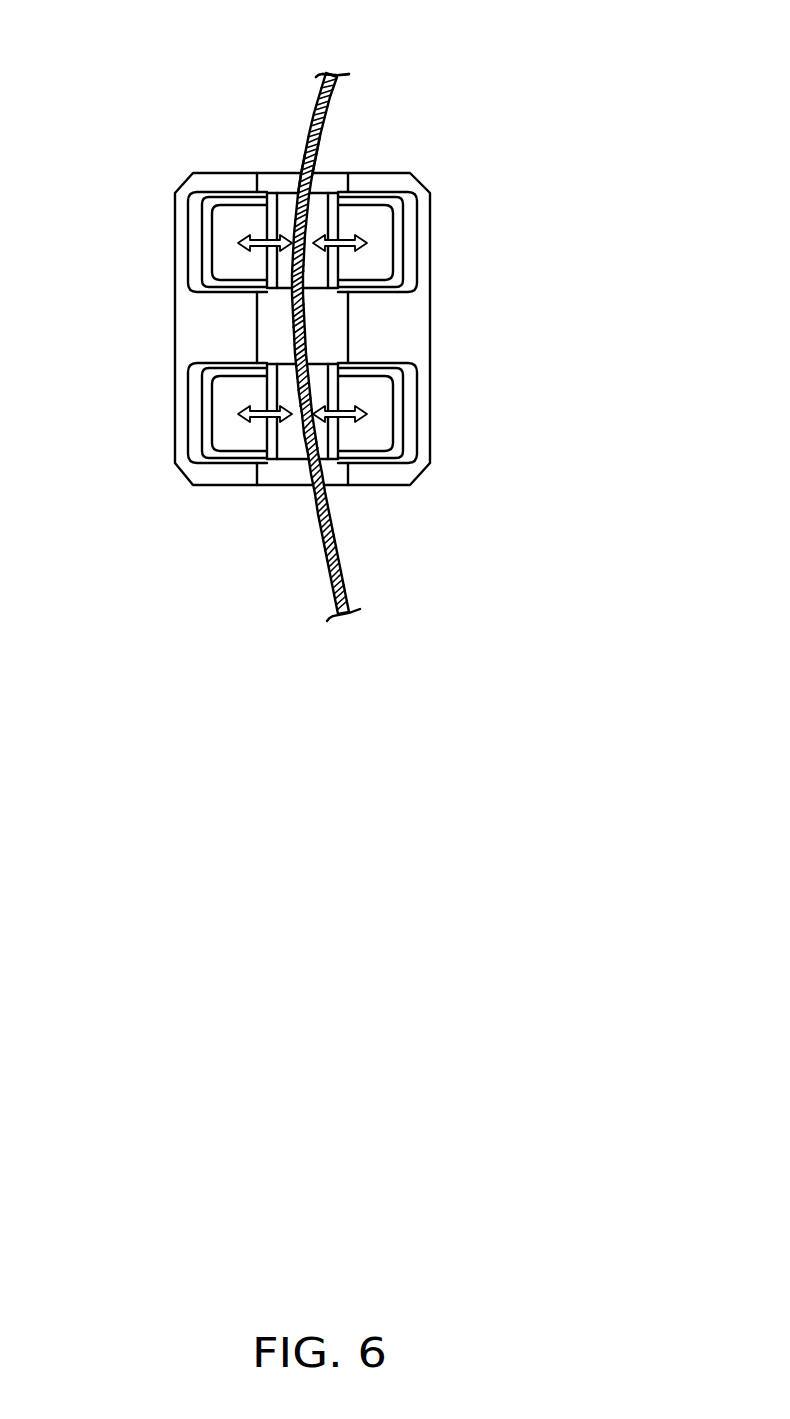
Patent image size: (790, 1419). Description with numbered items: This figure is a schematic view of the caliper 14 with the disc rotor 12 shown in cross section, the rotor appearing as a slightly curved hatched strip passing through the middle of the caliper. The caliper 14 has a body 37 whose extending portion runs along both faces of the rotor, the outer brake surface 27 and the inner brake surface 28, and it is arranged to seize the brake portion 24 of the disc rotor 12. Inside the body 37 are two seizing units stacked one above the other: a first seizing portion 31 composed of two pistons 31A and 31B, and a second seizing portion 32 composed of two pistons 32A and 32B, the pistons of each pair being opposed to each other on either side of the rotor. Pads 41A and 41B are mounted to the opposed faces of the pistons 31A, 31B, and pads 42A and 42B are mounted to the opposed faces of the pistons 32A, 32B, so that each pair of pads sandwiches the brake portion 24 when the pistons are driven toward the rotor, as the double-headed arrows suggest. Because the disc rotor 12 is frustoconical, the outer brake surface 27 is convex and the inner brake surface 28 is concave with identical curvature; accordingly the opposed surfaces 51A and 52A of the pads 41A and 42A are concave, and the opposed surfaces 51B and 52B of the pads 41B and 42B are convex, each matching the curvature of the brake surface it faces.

The disc rotor 12 is at (304, 570).
The caliper 14 is at (186, 502).
The brake portion 24 is at (319, 89).
The outer brake surface 27 is at (312, 127).
The inner brake surface 28 is at (336, 113).
The first seizing portion 31 is at (480, 238).
The piston 31A is at (238, 215).
The piston 31B is at (366, 215).
The second seizing portion 32 is at (470, 428).
The piston 32A is at (233, 382).
The piston 32B is at (365, 383).
The body 37 is at (430, 313).
The pad 41A is at (287, 223).
The pad 41B is at (317, 222).
The pad 42A is at (287, 395).
The pad 42B is at (315, 393).
The opposed surface 51A is at (287, 262).
The opposed surface 51B is at (315, 262).
The opposed surface 52A is at (287, 437).
The opposed surface 52B is at (315, 437).